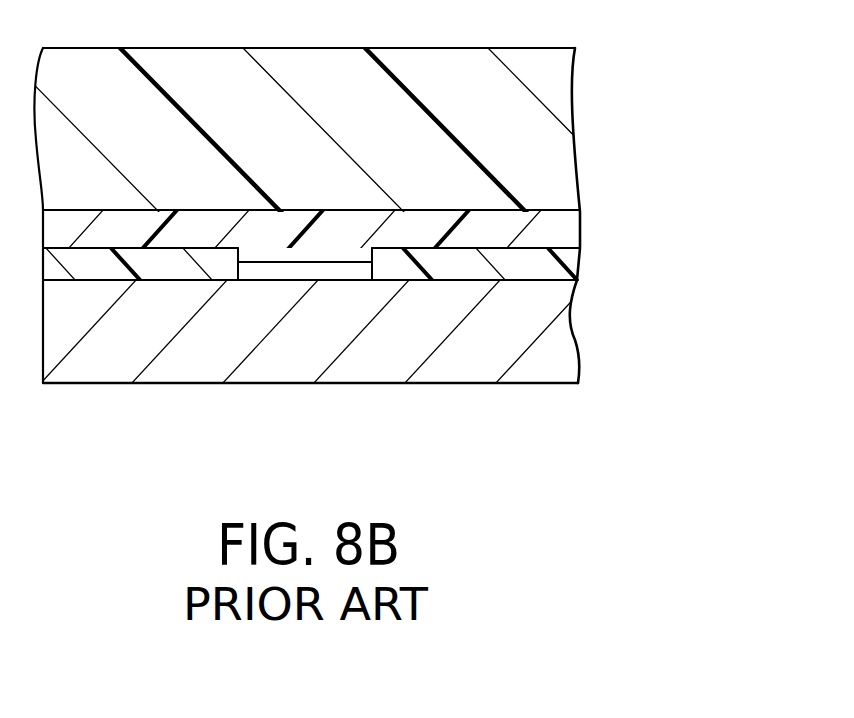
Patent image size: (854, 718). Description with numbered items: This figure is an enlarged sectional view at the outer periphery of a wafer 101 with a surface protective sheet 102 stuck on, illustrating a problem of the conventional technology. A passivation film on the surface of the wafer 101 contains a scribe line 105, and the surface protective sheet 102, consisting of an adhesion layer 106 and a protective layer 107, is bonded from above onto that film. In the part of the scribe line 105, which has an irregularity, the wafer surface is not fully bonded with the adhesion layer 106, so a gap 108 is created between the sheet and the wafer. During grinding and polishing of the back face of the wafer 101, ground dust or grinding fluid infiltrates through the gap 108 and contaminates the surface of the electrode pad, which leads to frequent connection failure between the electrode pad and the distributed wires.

The wafer 101 is at (555, 353).
The surface protective sheet 102 is at (678, 87).
The scribe line 105 is at (373, 268).
The adhesion layer 106 is at (555, 235).
The protective layer 107 is at (557, 125).
The gap 108 is at (297, 270).